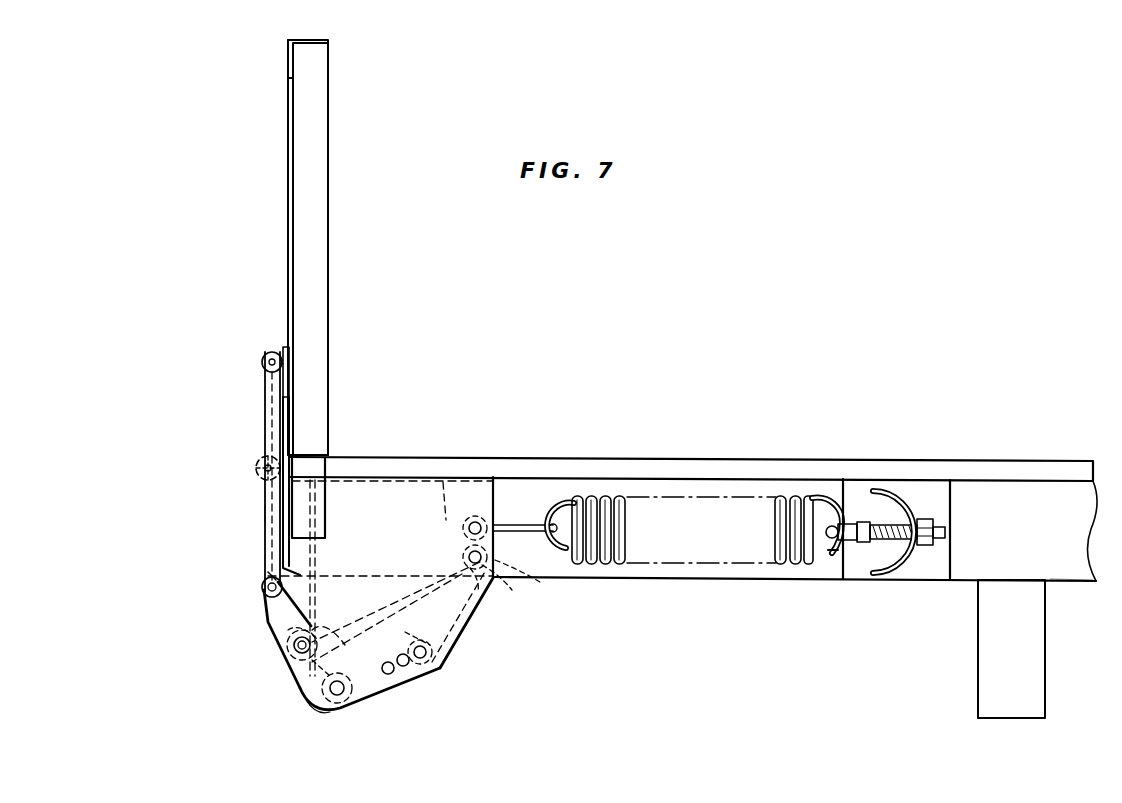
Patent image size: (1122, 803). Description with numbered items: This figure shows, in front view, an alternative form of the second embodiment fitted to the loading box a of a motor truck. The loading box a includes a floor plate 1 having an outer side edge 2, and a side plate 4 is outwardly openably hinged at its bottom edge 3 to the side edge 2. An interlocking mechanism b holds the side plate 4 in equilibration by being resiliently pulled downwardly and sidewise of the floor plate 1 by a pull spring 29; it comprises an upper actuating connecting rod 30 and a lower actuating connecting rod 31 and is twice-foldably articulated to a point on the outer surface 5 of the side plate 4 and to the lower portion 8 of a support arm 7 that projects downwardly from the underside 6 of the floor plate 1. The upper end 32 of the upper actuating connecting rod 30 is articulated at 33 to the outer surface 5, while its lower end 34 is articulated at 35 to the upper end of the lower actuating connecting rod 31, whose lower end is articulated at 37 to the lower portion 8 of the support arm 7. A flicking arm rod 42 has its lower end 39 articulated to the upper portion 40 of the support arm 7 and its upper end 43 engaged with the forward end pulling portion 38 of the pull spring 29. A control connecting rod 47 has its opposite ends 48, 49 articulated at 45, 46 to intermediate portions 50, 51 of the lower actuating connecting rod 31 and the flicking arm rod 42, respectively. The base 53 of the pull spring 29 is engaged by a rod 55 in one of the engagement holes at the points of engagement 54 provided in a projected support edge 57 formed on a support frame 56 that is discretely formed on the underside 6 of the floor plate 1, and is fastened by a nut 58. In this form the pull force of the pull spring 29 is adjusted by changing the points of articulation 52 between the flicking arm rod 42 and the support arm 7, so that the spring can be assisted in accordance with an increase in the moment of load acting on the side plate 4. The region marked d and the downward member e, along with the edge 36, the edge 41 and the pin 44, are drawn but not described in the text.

The floor plate 1 is at (738, 470).
The outer side edge 2 is at (306, 462).
The bottom edge 3 is at (298, 444).
The side plate 4 is at (316, 198).
The outer surface 5 is at (290, 190).
The underside 6 is at (426, 480).
The support arm 7 is at (377, 560).
The lower portion 8 is at (352, 712).
The pull spring 29 is at (612, 500).
The upper actuating connecting rod 30 is at (270, 494).
The lower actuating connecting rod 31 is at (290, 628).
The upper end 32 is at (272, 378).
The point of articulation 33 is at (268, 351).
The lower end 34 is at (272, 576).
The point of articulation 35 is at (262, 588).
The plate edge 36 is at (318, 708).
The point of articulation 37 is at (337, 696).
The forward end pulling portion 38 is at (495, 478).
The lower end 39 is at (442, 646).
The upper portion 40 is at (428, 656).
The plate edge 41 is at (437, 671).
The flicking arm rod 42 is at (460, 631).
The upper end 43 is at (443, 520).
The pivot pin 44 is at (470, 515).
The point of articulation 45 is at (295, 648).
The point of articulation 46 is at (478, 573).
The control connecting rod 47 is at (290, 640).
The end 48 is at (300, 656).
The end 49 is at (485, 566).
The intermediate portion 50 is at (310, 664).
The intermediate portion 51 is at (497, 561).
The points of articulation 52 is at (403, 667).
The base 53 is at (832, 549).
The points of engagement 54 is at (914, 520).
The rod 55 is at (862, 543).
The support frame 56 is at (920, 566).
The projected support edge 57 is at (885, 570).
The nut 58 is at (924, 520).
The loading box a is at (638, 364).
The interlocking mechanism b is at (268, 514).
The frame portion d is at (1068, 582).
The leg e is at (1040, 656).